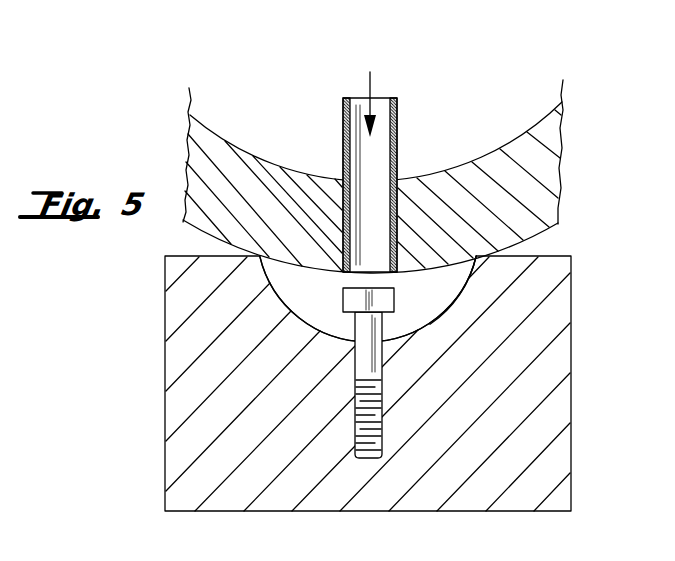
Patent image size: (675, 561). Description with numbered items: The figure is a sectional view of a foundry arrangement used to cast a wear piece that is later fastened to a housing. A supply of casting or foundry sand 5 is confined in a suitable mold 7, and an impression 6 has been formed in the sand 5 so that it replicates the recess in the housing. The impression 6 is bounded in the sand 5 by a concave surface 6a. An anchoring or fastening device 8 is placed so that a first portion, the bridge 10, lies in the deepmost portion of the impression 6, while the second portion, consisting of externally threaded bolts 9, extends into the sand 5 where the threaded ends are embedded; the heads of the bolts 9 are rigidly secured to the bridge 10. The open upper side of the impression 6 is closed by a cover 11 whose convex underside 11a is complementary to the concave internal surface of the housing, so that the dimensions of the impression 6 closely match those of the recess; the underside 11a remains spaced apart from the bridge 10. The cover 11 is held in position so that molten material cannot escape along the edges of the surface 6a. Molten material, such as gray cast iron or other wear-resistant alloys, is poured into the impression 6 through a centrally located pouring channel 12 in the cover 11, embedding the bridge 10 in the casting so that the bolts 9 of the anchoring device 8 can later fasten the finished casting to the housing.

The casting sand 5 is at (140, 352).
The impression 6 is at (430, 302).
The concave surface 6a is at (453, 297).
The mold 7 is at (260, 68).
The anchoring device 8 is at (300, 373).
The bolt 9 is at (320, 427).
The bridge 10 is at (322, 293).
The cover 11 is at (497, 167).
The convex underside 11a is at (205, 237).
The pouring channel 12 is at (384, 157).